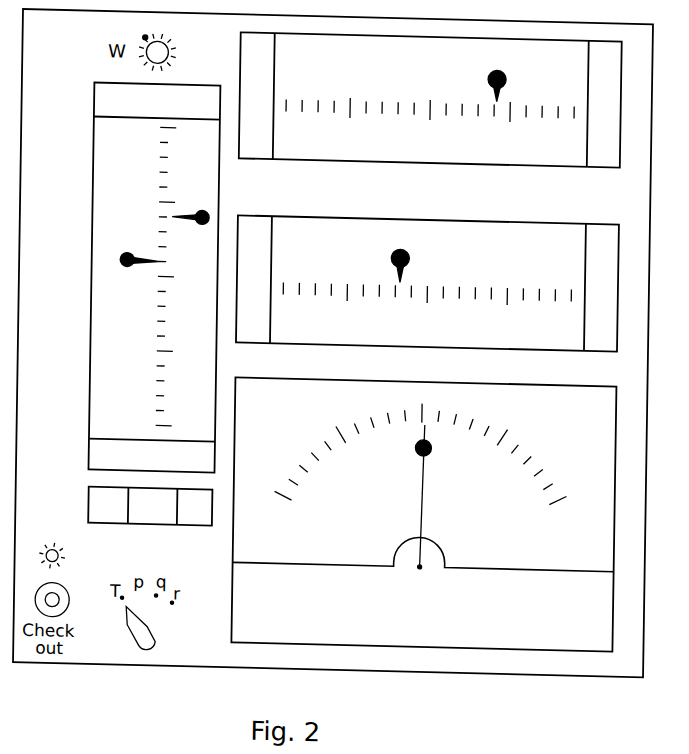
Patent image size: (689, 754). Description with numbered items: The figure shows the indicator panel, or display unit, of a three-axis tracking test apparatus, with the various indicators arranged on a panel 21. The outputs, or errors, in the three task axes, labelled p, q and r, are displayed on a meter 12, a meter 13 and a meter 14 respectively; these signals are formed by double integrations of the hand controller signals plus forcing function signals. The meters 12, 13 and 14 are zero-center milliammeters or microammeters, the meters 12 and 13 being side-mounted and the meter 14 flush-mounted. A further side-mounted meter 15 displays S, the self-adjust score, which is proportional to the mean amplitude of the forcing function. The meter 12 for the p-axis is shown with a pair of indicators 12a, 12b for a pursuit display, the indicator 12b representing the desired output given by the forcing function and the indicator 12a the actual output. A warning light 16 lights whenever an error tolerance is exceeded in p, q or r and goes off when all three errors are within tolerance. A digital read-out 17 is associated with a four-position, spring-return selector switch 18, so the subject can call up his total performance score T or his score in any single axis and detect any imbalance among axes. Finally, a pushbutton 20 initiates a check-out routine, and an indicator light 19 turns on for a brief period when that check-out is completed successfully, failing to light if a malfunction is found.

The meter 12 is at (105, 344).
The indicator 12a is at (122, 255).
The indicator 12b is at (213, 202).
The meter 13 is at (507, 330).
The meter 14 is at (468, 634).
The meter 15 is at (506, 145).
The warning light 16 is at (169, 48).
The digital read-out 17 is at (203, 519).
The selector switch 18 is at (162, 633).
The indicator light 19 is at (70, 554).
The pushbutton 20 is at (67, 597).
The panel 21 is at (373, 653).